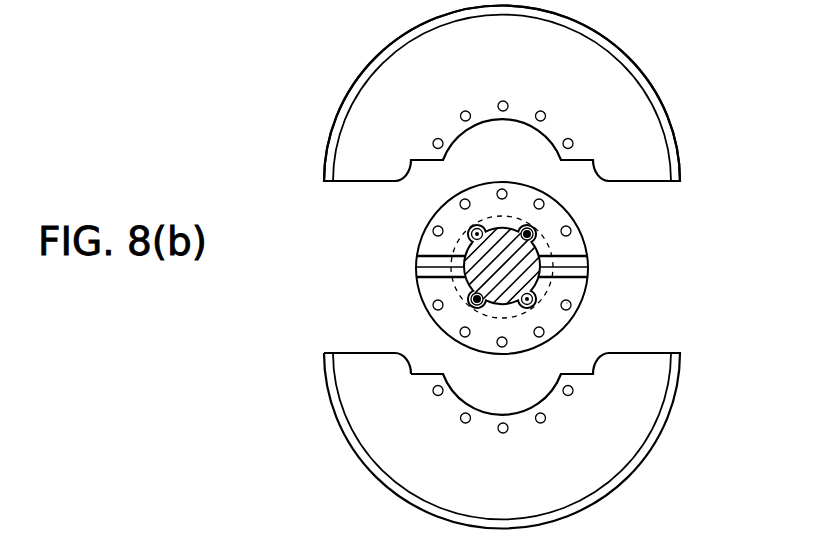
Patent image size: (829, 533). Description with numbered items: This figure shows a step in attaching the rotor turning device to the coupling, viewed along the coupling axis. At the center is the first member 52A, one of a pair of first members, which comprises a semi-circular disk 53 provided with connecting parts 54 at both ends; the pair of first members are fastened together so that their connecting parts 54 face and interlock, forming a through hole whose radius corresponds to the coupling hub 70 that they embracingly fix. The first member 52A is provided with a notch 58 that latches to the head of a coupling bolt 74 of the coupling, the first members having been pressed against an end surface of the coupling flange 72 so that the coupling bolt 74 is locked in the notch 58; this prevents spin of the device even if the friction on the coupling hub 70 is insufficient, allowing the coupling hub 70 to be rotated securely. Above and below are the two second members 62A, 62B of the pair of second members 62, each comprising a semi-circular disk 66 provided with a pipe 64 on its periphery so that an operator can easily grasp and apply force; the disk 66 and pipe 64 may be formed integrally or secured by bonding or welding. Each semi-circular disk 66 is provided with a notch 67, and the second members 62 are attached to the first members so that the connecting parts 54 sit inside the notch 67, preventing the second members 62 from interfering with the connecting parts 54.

The first member 52A is at (608, 227).
The semi-circular disk 53 is at (424, 237).
The connecting parts 54 is at (590, 262).
The notch 58 is at (510, 224).
The second members 62 is at (430, 267).
The second member 62A is at (678, 86).
The second member 62B is at (680, 431).
The pipe 64 is at (679, 134).
The semi-circular disk 66 is at (603, 80).
The notch 67 is at (412, 369).
The coupling hub 70 is at (452, 291).
The coupling flange 72 is at (592, 292).
The coupling bolt 74 is at (511, 228).